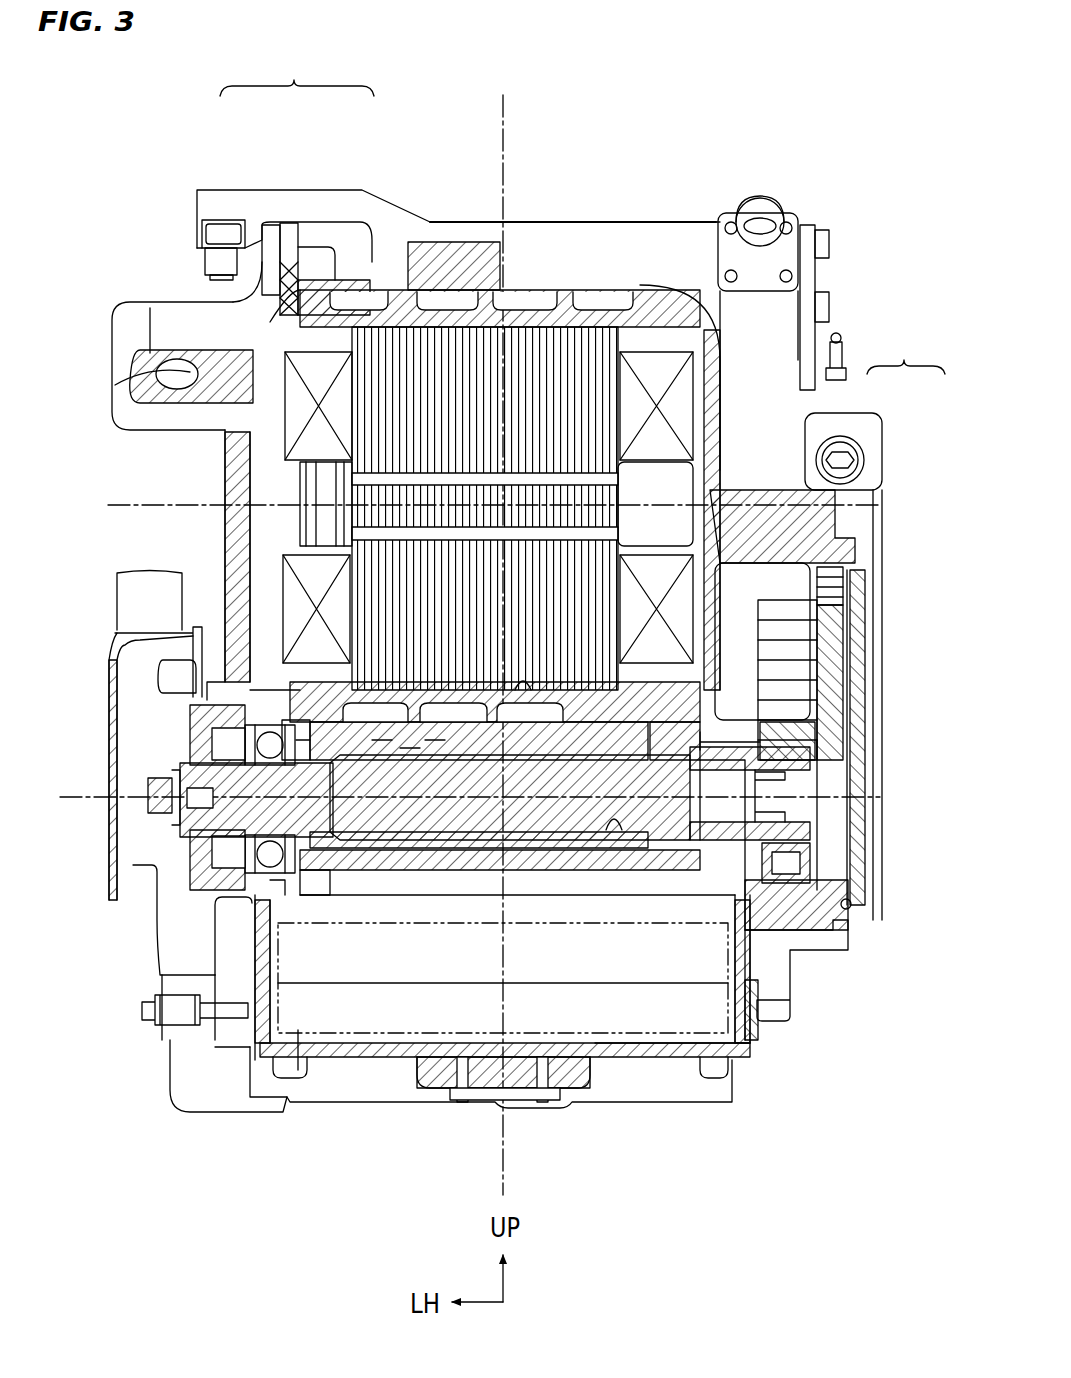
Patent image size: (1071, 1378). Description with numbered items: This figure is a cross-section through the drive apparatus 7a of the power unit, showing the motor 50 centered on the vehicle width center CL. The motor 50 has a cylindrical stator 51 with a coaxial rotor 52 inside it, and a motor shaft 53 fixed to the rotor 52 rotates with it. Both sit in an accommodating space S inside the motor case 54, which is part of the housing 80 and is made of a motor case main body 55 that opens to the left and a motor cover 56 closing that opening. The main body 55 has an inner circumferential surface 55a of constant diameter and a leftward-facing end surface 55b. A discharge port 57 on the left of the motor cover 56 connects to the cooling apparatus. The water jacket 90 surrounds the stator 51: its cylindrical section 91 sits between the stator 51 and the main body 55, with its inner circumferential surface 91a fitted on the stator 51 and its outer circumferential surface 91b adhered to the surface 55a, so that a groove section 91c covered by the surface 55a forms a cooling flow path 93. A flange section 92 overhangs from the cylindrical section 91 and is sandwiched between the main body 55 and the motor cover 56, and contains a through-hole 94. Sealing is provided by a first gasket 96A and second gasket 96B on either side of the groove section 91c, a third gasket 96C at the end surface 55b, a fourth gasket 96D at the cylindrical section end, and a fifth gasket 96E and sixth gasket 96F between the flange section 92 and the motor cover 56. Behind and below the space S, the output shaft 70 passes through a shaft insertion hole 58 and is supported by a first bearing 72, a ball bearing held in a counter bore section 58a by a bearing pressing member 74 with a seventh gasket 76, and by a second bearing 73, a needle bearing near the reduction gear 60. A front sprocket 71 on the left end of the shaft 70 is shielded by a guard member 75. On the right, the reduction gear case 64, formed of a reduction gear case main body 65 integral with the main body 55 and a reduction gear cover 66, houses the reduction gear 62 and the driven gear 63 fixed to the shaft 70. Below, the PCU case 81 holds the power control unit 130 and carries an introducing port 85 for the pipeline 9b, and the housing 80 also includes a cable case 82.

The drive apparatus 7a is at (682, 138).
The pipeline 9b is at (138, 600).
The motor 50 is at (430, 216).
The stator 51 is at (530, 345).
The rotor 52 is at (560, 497).
The motor shaft 53 is at (695, 475).
The motor case 54 is at (296, 182).
The motor case main body 55 is at (390, 278).
The inner circumferential surface 55a is at (490, 300).
The end surface 55b is at (318, 262).
The motor cover 56 is at (247, 290).
The discharge port 57 is at (135, 302).
The shaft insertion hole 58 is at (574, 728).
The counter bore section 58a is at (243, 900).
The reduction gear 60 is at (852, 847).
The reduction gear 62 is at (832, 632).
The driven gear 63 is at (852, 904).
The reduction gear case 64 is at (827, 626).
The reduction gear case main body 65 is at (782, 530).
The reduction gear cover 66 is at (858, 555).
The output shaft 70 is at (742, 830).
The front sprocket 71 is at (215, 822).
The first bearing 72 is at (170, 868).
The second bearing 73 is at (790, 738).
The bearing pressing member 74 is at (300, 740).
The guard member 75 is at (109, 782).
The seventh gasket 76 is at (240, 714).
The housing 80 is at (708, 215).
The PCU case 81 is at (656, 1058).
The cable case 82 is at (816, 278).
The introducing port 85 is at (190, 1103).
The water jacket 90 is at (500, 829).
The cylindrical section 91 is at (463, 695).
The inner circumferential surface 91a is at (521, 690).
The outer circumferential surface 91b is at (614, 830).
The groove section 91c is at (402, 752).
The flange section 92 is at (386, 708).
The flow path 93 is at (434, 712).
The through-hole 94 is at (334, 868).
The first gasket 96A is at (330, 716).
The second gasket 96B is at (666, 730).
The third gasket 96C is at (302, 745).
The fourth gasket 96D is at (702, 752).
The fifth gasket 96E is at (300, 292).
The sixth gasket 96F is at (285, 882).
The power control unit 130 is at (378, 1035).
The accommodating space S is at (292, 484).